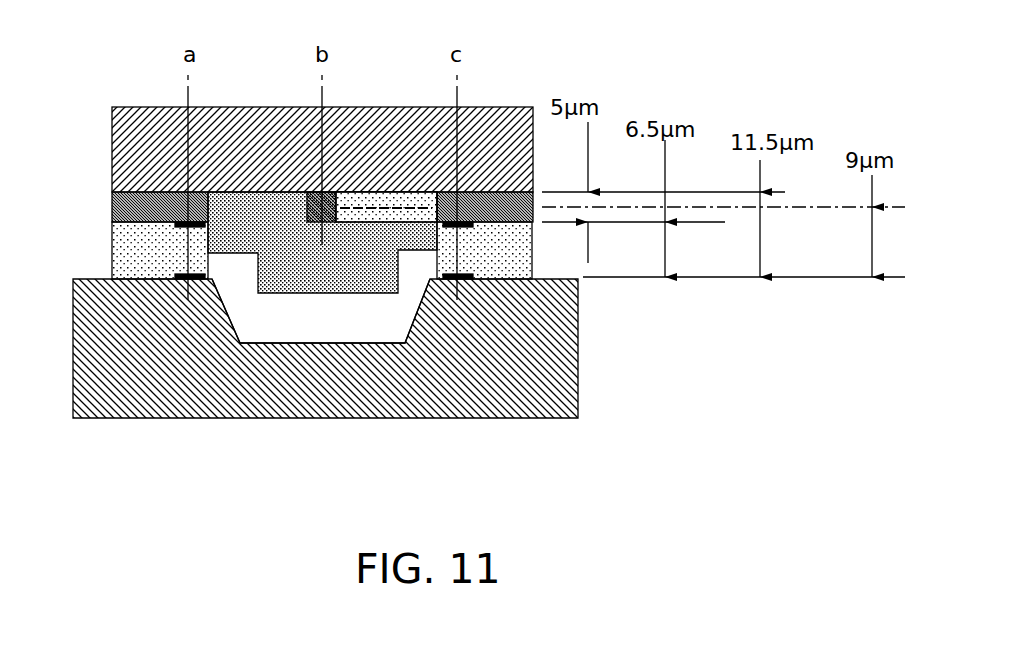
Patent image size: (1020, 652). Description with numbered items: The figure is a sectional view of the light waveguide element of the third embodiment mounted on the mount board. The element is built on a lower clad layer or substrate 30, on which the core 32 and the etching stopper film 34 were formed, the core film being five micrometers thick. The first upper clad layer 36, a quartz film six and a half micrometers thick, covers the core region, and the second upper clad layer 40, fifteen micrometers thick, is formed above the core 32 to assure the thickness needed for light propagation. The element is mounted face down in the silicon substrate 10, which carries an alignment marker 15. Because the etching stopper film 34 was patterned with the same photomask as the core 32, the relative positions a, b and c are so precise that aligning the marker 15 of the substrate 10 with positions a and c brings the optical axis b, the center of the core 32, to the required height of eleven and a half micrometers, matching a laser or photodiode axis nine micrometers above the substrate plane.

The lower clad layer 30 is at (112, 152).
The etching stopper film 34 is at (175, 229).
The first upper clad layer 36 is at (135, 268).
The alignment marker 15 is at (177, 285).
The substrate 10 is at (73, 375).
The core 32 is at (313, 226).
The second upper clad layer 40 is at (348, 293).